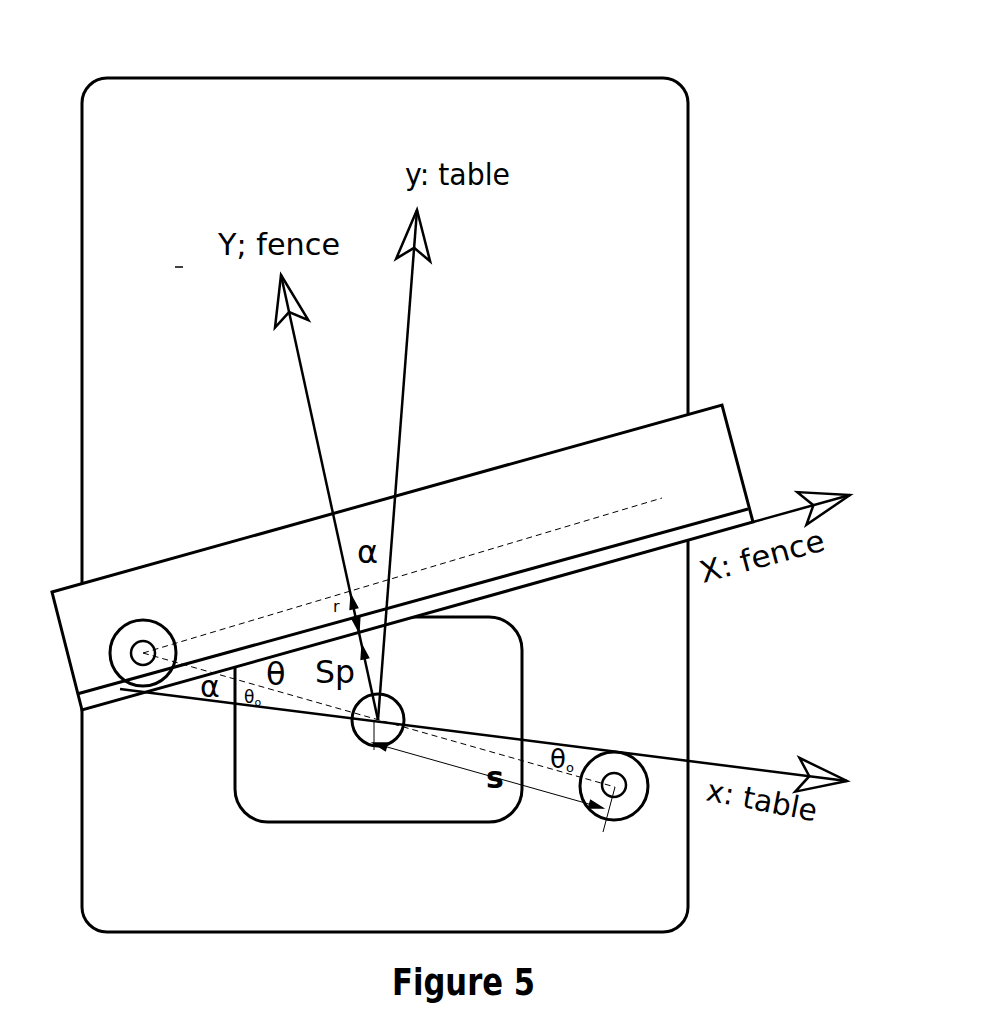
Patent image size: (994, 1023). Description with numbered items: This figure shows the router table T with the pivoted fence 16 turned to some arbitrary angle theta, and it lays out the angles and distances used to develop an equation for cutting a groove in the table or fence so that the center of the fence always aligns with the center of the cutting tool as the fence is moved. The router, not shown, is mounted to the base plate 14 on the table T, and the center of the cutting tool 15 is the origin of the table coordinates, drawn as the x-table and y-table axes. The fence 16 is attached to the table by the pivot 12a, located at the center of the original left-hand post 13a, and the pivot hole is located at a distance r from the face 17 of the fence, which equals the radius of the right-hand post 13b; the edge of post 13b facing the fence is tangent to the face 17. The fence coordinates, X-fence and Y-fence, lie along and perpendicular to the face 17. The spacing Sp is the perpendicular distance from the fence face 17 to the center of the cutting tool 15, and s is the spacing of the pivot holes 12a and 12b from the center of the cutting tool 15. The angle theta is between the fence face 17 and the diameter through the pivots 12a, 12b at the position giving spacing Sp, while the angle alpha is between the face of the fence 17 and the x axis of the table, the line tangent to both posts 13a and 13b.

The router table T is at (368, 78).
The pivot 12a is at (130, 648).
The pivot 12b is at (622, 790).
The post 13a is at (167, 632).
The post 13b is at (626, 816).
The base plate 14 is at (420, 823).
The cutting tool 15 is at (360, 732).
The fence 16 is at (583, 442).
The face of the fence 17 is at (595, 567).